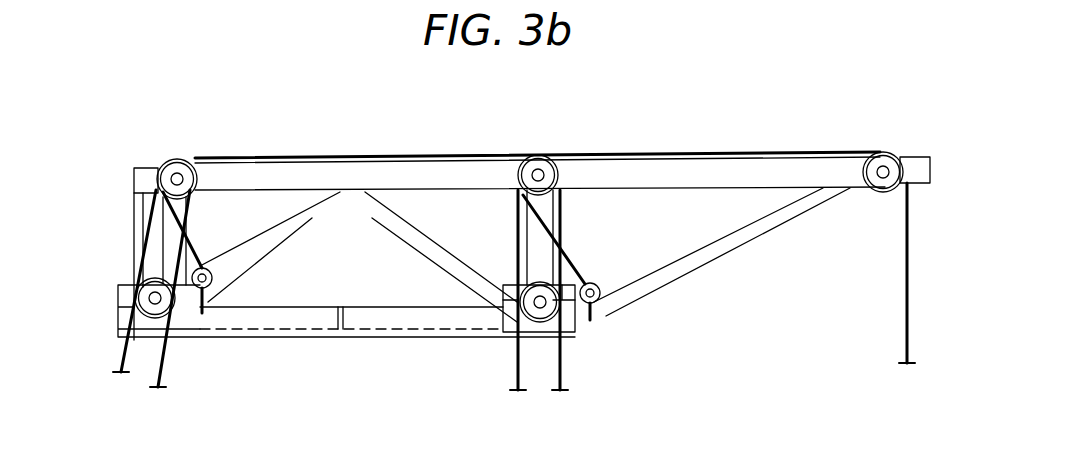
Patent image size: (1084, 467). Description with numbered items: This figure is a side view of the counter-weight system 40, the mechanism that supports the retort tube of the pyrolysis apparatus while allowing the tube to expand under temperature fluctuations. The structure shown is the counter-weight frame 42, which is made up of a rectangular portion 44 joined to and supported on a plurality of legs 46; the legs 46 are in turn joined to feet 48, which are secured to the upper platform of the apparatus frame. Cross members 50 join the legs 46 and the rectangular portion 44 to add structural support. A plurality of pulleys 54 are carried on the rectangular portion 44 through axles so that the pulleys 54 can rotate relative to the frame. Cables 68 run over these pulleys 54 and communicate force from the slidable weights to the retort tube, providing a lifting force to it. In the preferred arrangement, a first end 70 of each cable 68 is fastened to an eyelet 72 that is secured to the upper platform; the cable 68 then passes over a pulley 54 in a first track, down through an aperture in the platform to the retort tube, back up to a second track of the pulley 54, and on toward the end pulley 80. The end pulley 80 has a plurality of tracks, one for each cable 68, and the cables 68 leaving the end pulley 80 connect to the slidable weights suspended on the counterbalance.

The counter-weight system 40 is at (678, 104).
The counter-weight frame 42 is at (412, 140).
The rectangular portion 44 is at (570, 403).
The legs 46 is at (540, 248).
The feet 48 is at (157, 340).
The cross members 50 is at (369, 221).
The pulleys 54 is at (187, 160).
The cables 68 is at (136, 215).
The first end 70 is at (167, 282).
The eyelet 72 is at (212, 278).
The end pulley 80 is at (882, 195).